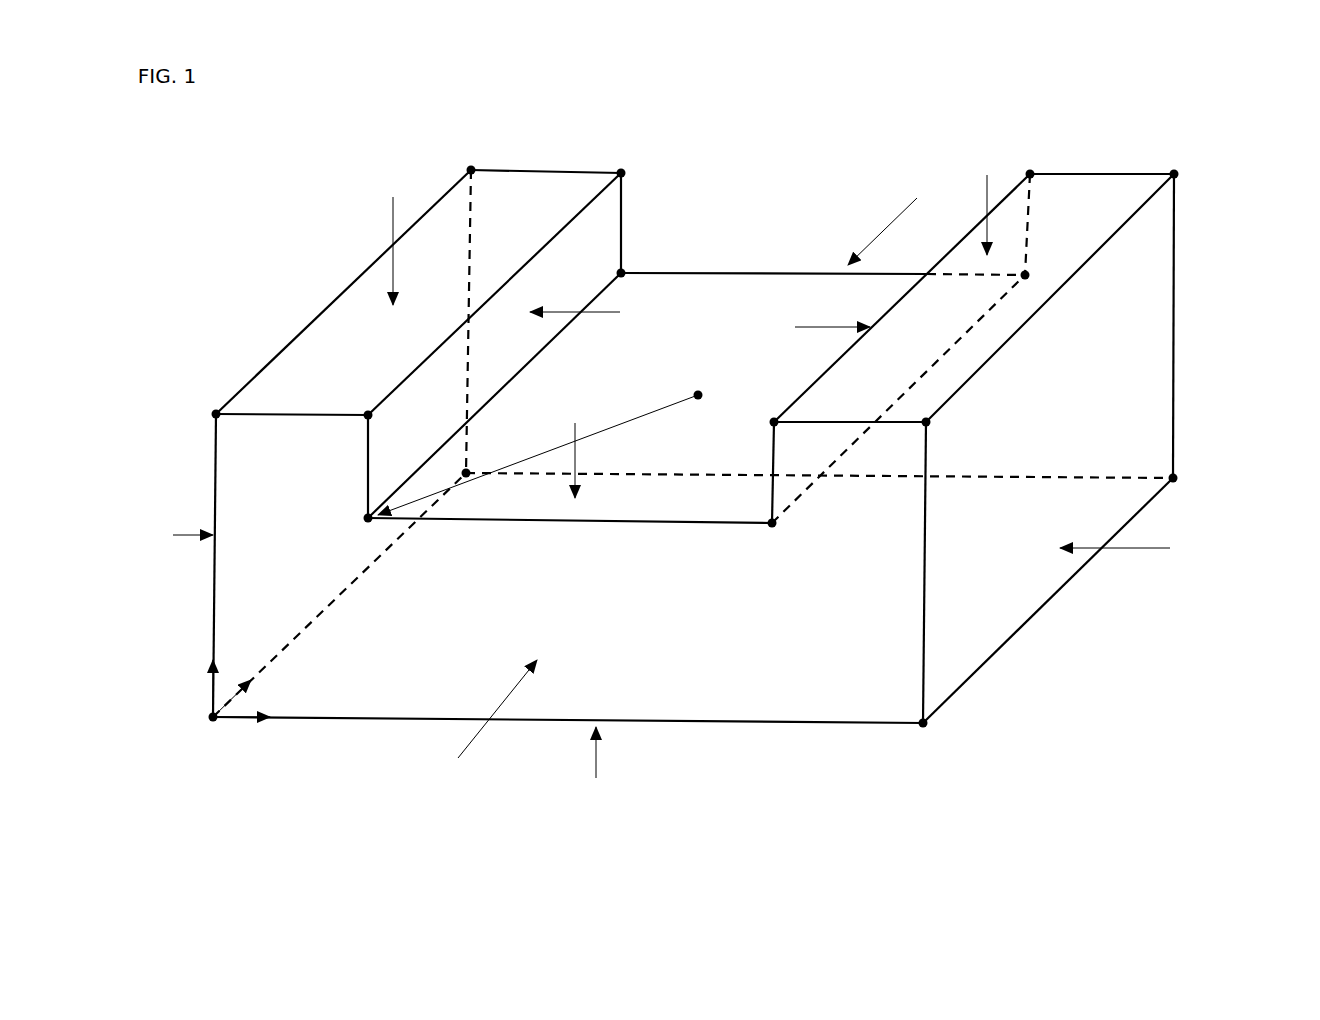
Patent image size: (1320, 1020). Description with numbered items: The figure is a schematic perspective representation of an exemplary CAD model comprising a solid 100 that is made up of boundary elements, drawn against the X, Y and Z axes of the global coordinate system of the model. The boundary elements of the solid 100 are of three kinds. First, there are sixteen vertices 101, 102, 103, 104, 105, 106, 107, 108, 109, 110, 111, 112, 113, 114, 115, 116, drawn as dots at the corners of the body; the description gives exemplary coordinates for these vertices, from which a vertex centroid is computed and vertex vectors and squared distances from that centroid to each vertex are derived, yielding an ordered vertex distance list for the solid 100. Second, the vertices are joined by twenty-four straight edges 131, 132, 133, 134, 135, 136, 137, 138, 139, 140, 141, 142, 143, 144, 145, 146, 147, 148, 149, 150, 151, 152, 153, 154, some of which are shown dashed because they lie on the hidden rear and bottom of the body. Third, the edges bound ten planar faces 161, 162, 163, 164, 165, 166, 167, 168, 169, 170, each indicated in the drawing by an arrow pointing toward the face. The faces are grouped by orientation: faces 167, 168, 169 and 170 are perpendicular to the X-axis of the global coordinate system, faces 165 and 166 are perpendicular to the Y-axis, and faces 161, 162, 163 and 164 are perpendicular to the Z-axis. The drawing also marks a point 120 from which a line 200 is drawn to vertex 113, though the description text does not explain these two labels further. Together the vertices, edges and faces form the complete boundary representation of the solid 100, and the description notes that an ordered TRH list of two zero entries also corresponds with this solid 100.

The solid 100 is at (328, 247).
The vertex 101 is at (211, 720).
The vertex 102 is at (920, 720).
The vertex 103 is at (469, 471).
The vertex 104 is at (1170, 476).
The vertex 105 is at (216, 410).
The vertex 106 is at (471, 166).
The vertex 107 is at (368, 411).
The vertex 108 is at (623, 171).
The vertex 109 is at (775, 418).
The vertex 110 is at (1032, 172).
The vertex 111 is at (929, 425).
The vertex 112 is at (1176, 172).
The vertex 113 is at (366, 521).
The vertex 114 is at (624, 271).
The vertex 115 is at (1028, 278).
The vertex 116 is at (770, 527).
The reference point 120 is at (698, 391).
The straight edge 131 is at (218, 592).
The straight edge 132 is at (366, 461).
The straight edge 133 is at (772, 447).
The straight edge 134 is at (926, 549).
The straight edge 135 is at (470, 238).
The straight edge 136 is at (625, 205).
The straight edge 137 is at (1030, 226).
The straight edge 138 is at (1177, 240).
The straight edge 139 is at (737, 719).
The straight edge 140 is at (573, 524).
The straight edge 141 is at (258, 420).
The straight edge 142 is at (898, 426).
The straight edge 143 is at (1053, 476).
The straight edge 144 is at (965, 278).
The straight edge 145 is at (553, 171).
The straight edge 146 is at (1125, 173).
The straight edge 147 is at (337, 600).
The straight edge 148 is at (1045, 603).
The straight edge 149 is at (310, 323).
The straight edge 150 is at (1068, 283).
The straight edge 151 is at (446, 340).
The straight edge 152 is at (535, 358).
The straight edge 153 is at (818, 380).
The straight edge 154 is at (972, 328).
The planar face 161 is at (597, 767).
The planar face 162 is at (574, 447).
The planar face 163 is at (393, 238).
The planar face 164 is at (985, 198).
The planar face 165 is at (480, 725).
The planar face 166 is at (897, 217).
The planar face 167 is at (189, 517).
The planar face 168 is at (1135, 542).
The planar face 169 is at (596, 311).
The planar face 170 is at (811, 326).
The path from reference point to vertex 200 is at (643, 420).